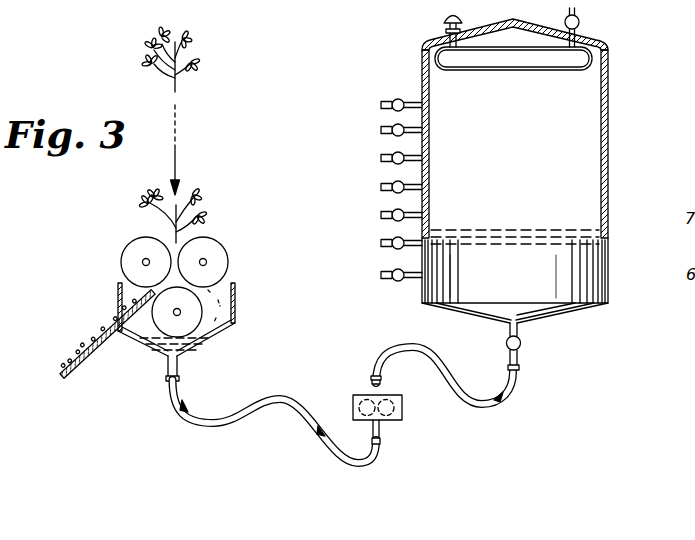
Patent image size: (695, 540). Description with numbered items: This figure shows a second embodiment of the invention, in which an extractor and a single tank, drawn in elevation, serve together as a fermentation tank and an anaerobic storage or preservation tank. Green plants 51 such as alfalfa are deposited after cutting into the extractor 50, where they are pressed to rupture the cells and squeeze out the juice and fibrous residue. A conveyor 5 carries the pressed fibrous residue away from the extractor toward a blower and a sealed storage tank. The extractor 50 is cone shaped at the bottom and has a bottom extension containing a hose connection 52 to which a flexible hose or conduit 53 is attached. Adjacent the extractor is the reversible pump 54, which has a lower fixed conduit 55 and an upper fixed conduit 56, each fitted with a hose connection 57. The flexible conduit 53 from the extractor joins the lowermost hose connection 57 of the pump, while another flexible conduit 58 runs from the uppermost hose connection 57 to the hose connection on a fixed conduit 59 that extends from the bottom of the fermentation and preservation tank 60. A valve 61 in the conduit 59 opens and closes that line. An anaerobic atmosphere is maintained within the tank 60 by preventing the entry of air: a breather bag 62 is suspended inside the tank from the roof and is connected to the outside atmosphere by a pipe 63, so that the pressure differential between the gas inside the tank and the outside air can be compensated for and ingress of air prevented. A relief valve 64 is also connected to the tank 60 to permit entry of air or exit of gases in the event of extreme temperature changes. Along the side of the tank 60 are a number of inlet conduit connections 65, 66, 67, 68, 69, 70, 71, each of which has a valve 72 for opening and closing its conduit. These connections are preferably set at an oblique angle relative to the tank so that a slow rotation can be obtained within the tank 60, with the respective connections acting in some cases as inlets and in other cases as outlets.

The conveyor 5 is at (102, 344).
The extractor 50 is at (235, 305).
The green plants 51 is at (178, 72).
The hose connection 52 is at (178, 378).
The flexible hose or conduit 53 is at (230, 432).
The reversible pump 54 is at (400, 406).
The lower fixed conduit 55 is at (381, 428).
The upper fixed conduit 56 is at (381, 388).
The hose connection 57 is at (372, 379).
The flexible conduit 58 is at (477, 336).
The fixed conduit 59 is at (520, 326).
The fermentation and preservation tank 60 is at (608, 187).
The valve 61 is at (521, 343).
The breather bag 62 is at (542, 60).
The pipe 63 is at (446, 27).
The relief valve 64 is at (580, 24).
The inlet conduit connection 65 is at (396, 97).
The inlet conduit connection 66 is at (383, 129).
The inlet conduit connection 67 is at (383, 157).
The inlet conduit connection 68 is at (383, 187).
The inlet conduit connection 69 is at (383, 215).
The inlet conduit connection 70 is at (383, 246).
The inlet conduit connection 71 is at (389, 279).
The valve 72 is at (382, 110).